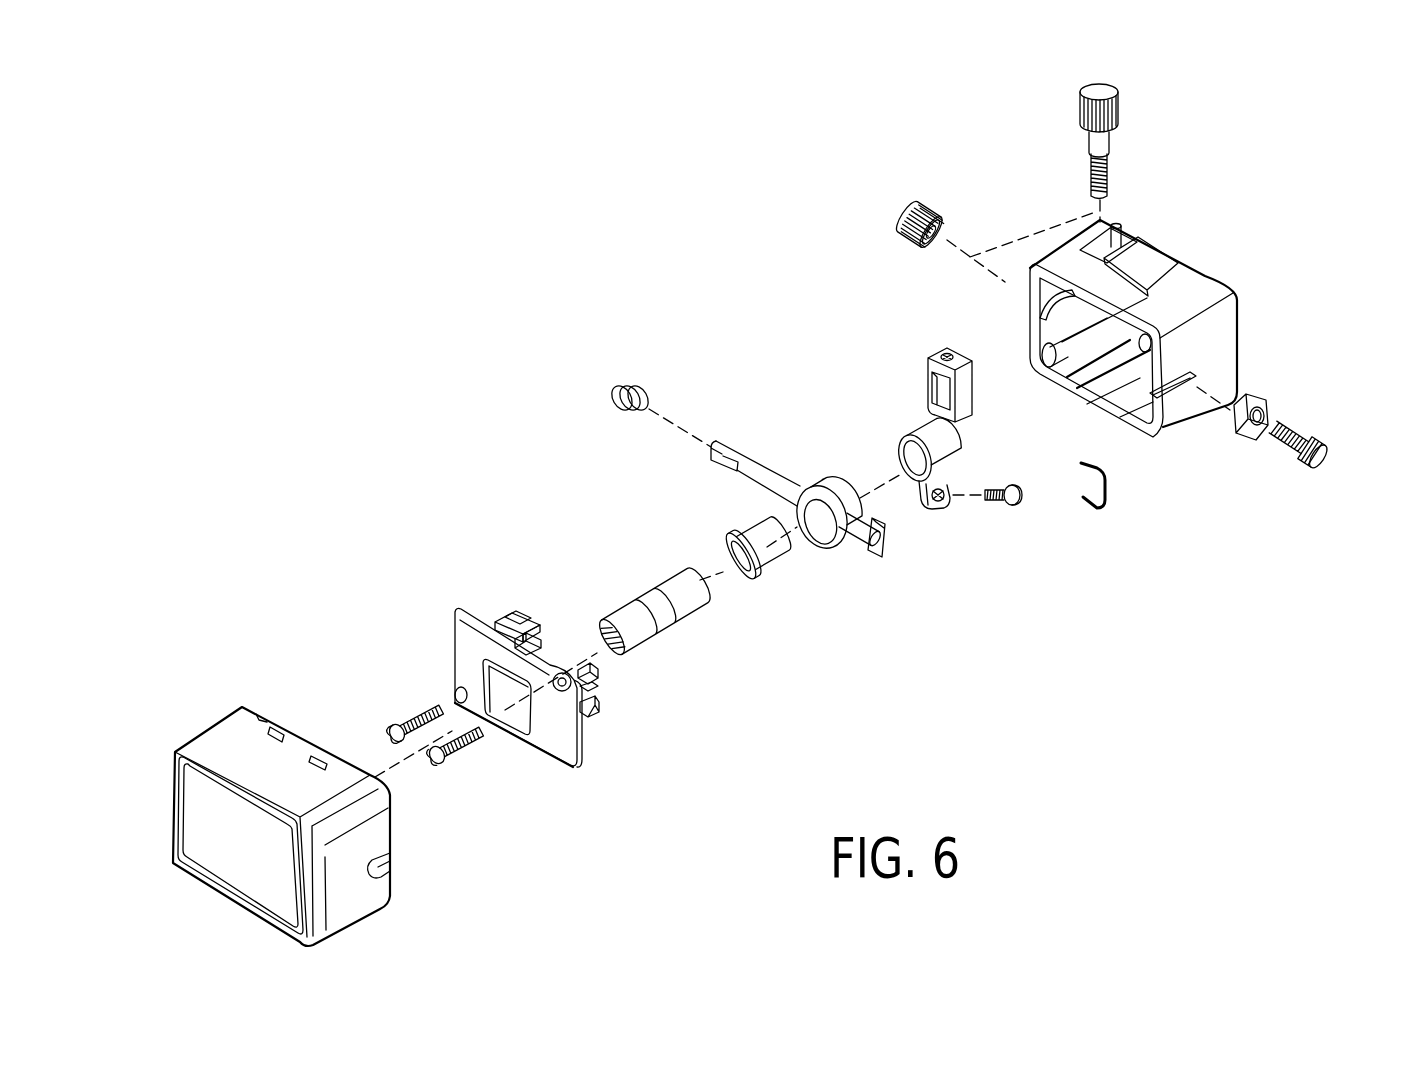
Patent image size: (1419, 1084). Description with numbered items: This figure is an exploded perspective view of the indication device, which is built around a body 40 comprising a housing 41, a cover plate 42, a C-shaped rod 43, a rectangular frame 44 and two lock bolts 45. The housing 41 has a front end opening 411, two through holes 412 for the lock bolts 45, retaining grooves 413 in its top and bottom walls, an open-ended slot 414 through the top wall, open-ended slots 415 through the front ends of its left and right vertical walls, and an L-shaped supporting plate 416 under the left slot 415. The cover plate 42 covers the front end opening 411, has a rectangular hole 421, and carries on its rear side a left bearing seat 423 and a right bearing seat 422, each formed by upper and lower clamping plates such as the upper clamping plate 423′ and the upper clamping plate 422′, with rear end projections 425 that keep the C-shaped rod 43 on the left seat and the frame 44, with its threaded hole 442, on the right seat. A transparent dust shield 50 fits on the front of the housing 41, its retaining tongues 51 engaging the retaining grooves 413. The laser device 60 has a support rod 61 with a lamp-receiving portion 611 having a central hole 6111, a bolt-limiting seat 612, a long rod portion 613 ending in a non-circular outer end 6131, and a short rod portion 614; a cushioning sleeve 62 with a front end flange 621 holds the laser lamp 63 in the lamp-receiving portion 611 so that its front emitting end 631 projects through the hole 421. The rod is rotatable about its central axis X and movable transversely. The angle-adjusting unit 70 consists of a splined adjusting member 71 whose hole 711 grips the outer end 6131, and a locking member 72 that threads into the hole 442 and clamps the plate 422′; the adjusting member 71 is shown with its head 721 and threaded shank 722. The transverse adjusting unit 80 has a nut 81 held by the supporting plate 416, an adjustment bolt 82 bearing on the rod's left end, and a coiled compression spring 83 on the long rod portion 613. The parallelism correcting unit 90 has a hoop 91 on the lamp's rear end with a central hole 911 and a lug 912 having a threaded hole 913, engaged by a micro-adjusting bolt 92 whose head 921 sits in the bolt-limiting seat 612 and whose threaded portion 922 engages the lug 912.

The body 40 is at (1224, 265).
The housing 41 is at (1224, 307).
The front end opening 411 is at (1134, 415).
The through holes 412 is at (1160, 337).
The retaining grooves 413 is at (1164, 260).
The open-ended slot 414 is at (1114, 223).
The open-ended slots 415 is at (1046, 313).
The L-shaped supporting plate 416 is at (1161, 422).
The cover plate 42 is at (562, 755).
The rectangular hole 421 is at (523, 722).
The right bearing seat 422 is at (513, 622).
The upper clamping plate 422′ is at (535, 616).
The left bearing seat 423 is at (598, 688).
The upper clamping plate 423′ is at (596, 670).
The rear end projection 425 is at (522, 614).
The C-shaped rod 43 is at (1101, 504).
The rectangular frame 44 is at (937, 348).
The threaded hole 442 is at (947, 353).
The lock bolts 45 is at (438, 760).
The dust shield 50 is at (194, 710).
The retaining tongues 51 is at (303, 747).
The laser device 60 is at (811, 560).
The support rod 61 is at (790, 466).
The lamp-receiving portion 611 is at (834, 478).
The central hole 6111 is at (827, 544).
The bolt-limiting seat 612 is at (862, 558).
The long rod portion 613 is at (757, 446).
The outer end 6131 is at (718, 442).
The short rod portion 614 is at (884, 556).
The cushioning sleeve 62 is at (773, 566).
The front end flange 621 is at (737, 583).
The laser lamp 63 is at (647, 600).
The front emitting end 631 is at (612, 624).
The angle-adjusting unit 70 is at (1140, 105).
The adjusting member 71 is at (920, 198).
The hole 711 is at (945, 223).
The locking member 72 is at (1106, 138).
The head of thumbscrew 721 is at (1082, 100).
The threaded portion 722 is at (1090, 165).
The transverse adjusting unit 80 is at (1330, 428).
The nut 81 is at (1270, 400).
The adjustment bolt 82 is at (1324, 455).
The coiled compression spring 83 is at (630, 382).
The parallelism correcting unit 90 is at (947, 524).
The hoop 91 is at (942, 452).
The central hole 911 is at (903, 450).
The lug 912 is at (925, 507).
The threaded hole 913 is at (951, 499).
The micro-adjusting bolt 92 is at (1011, 487).
The head 921 is at (1021, 497).
The threaded portion 922 is at (998, 503).
The central axis X is at (668, 395).